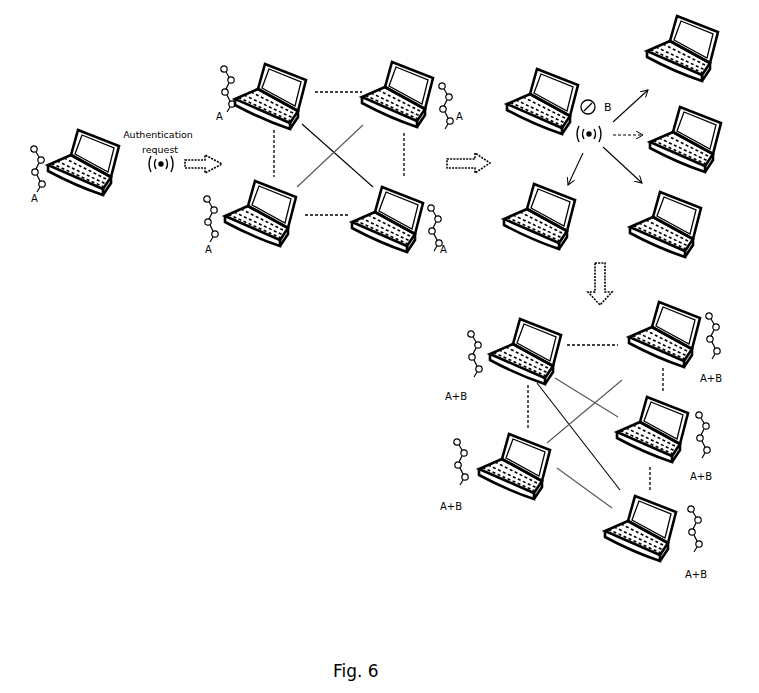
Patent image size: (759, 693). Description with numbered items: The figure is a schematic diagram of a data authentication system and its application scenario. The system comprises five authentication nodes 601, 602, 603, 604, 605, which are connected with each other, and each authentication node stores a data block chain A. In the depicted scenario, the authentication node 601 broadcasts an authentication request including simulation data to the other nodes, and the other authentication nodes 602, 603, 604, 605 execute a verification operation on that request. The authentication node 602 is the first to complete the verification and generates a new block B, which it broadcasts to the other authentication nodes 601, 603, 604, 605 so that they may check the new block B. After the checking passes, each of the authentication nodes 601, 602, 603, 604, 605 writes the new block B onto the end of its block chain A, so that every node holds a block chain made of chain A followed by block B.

The authentication node 601 is at (385, 195).
The authentication node 602 is at (406, 229).
The authentication node 603 is at (544, 267).
The authentication node 604 is at (526, 380).
The authentication node 605 is at (400, 348).